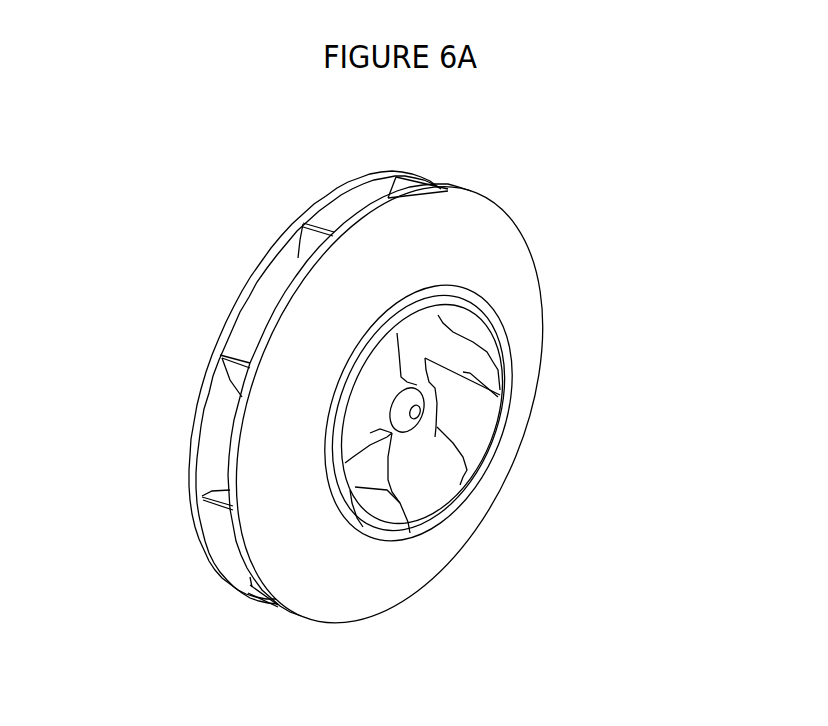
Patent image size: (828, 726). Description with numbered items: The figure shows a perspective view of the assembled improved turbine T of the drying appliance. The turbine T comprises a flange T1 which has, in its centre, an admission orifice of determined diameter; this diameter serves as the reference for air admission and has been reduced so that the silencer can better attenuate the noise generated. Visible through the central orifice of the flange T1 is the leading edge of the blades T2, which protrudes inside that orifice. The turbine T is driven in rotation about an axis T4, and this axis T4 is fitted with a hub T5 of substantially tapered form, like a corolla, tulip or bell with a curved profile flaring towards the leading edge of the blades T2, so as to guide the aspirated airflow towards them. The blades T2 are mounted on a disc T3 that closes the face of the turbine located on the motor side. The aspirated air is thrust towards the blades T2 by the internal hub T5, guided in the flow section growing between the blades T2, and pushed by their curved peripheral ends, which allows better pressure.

The turbine T is at (222, 206).
The flange T1 is at (513, 292).
The blades T2 is at (471, 418).
The disc T3 is at (196, 481).
The axis T4 is at (418, 415).
The hub T5 is at (372, 410).